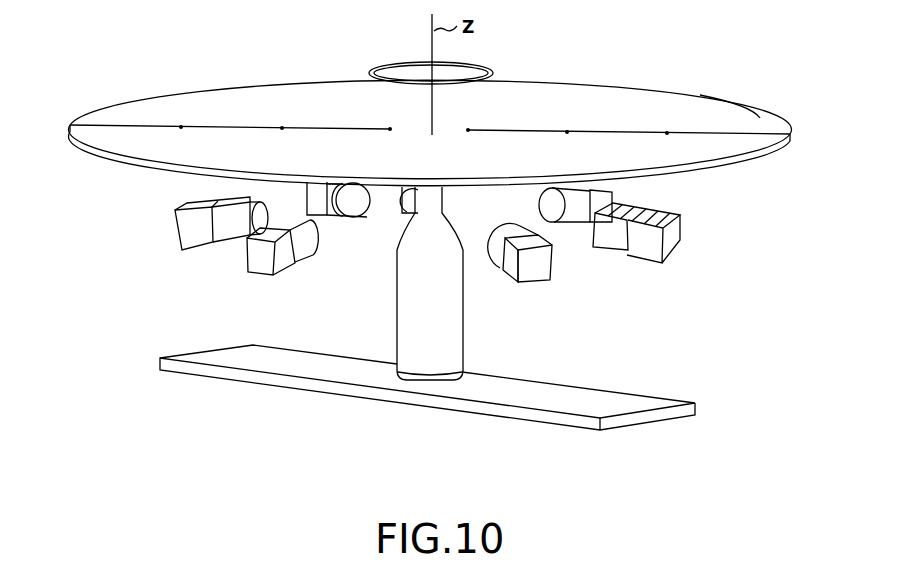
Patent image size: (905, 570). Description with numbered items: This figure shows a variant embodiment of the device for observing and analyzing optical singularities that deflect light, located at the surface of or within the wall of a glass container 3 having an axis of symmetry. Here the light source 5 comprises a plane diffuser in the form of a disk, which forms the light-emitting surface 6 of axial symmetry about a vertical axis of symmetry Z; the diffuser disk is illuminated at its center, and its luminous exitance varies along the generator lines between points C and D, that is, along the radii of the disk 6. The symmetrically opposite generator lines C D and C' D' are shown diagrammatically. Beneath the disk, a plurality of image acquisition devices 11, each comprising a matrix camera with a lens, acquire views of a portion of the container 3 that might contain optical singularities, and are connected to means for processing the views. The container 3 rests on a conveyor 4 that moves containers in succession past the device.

The glass container 3 is at (402, 322).
The conveyor 4 is at (625, 402).
The light source 5 is at (621, 76).
The light-emitting surface of axial symmetry 6 is at (706, 113).
The image acquisition device 11 is at (260, 267).